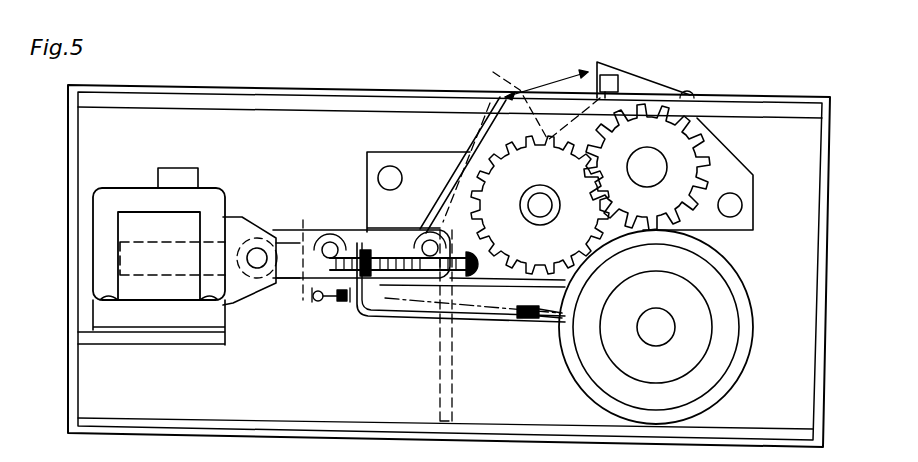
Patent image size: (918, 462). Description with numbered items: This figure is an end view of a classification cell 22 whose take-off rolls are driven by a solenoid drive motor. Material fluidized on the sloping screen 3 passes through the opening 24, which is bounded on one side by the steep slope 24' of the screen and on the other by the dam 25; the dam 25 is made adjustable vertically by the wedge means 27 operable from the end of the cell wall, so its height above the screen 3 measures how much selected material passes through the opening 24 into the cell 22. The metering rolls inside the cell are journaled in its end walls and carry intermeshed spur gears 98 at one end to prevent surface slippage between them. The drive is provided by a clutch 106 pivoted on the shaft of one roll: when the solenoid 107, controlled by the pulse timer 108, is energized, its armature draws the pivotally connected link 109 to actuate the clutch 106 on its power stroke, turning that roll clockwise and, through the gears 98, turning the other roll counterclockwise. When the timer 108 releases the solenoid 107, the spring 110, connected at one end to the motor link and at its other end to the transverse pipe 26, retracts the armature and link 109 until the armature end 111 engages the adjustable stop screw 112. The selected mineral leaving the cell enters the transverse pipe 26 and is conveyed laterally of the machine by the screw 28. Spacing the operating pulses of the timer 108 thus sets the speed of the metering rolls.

The screen 3 is at (282, 86).
The classifier cell 22 is at (72, 205).
The opening 24 is at (510, 145).
The steep slope 24' is at (503, 100).
The dam 25 is at (604, 76).
The transverse pipe 26 is at (735, 270).
The wedge means 27 is at (624, 90).
The screw 28 is at (720, 297).
The spur gears 98 is at (620, 136).
The clutch 106 is at (505, 150).
The solenoid 107 is at (130, 262).
The timer 108 is at (176, 174).
The link 109 is at (286, 284).
The spring 110 is at (342, 300).
The armature end 111 is at (283, 248).
The adjustable stop screw 112 is at (312, 236).